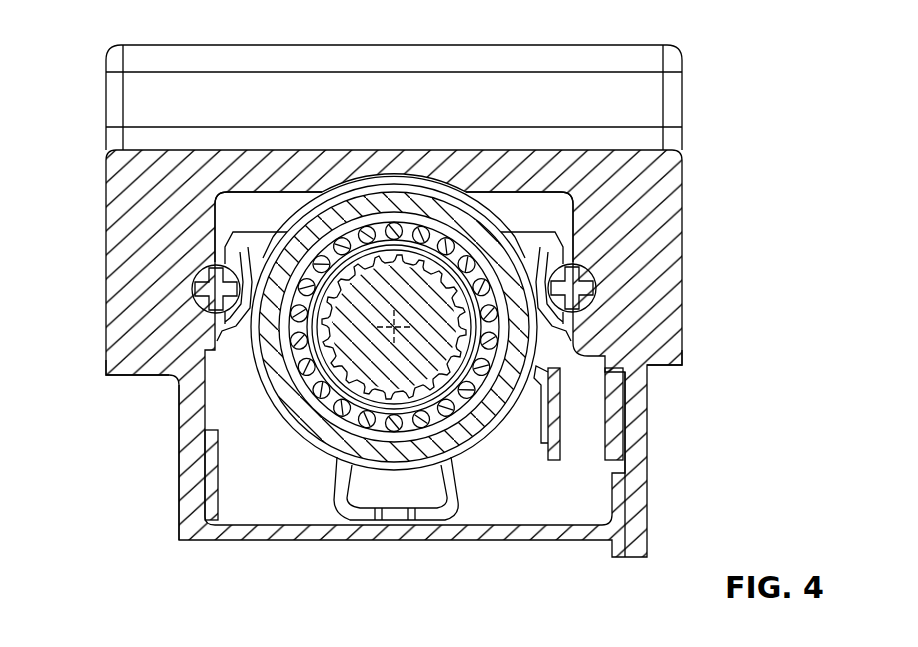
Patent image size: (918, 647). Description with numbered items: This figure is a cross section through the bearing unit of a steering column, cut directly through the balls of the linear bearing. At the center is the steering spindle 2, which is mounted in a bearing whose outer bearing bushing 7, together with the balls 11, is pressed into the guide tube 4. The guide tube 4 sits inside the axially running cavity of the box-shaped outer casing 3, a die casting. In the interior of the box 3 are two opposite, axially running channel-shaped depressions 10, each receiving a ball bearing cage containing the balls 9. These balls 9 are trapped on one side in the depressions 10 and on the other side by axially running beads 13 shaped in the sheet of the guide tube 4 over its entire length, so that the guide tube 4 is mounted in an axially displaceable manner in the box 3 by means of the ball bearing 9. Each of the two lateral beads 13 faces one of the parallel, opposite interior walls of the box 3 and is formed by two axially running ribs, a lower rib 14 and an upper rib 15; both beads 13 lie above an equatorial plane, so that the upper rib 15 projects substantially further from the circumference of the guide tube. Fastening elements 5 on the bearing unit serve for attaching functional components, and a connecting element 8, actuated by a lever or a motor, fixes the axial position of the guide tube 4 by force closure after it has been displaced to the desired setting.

The steering spindle 2 is at (413, 358).
The box-shaped outer casing 3 is at (180, 387).
The guide tube 4 is at (468, 203).
The fastening elements 5 is at (513, 97).
The bearing bushing 7 is at (447, 217).
The connecting element 8 is at (560, 418).
The balls 9 is at (192, 290).
The channel-shaped depressions 10 is at (105, 376).
The balls 11 is at (366, 404).
The beads 13 is at (210, 267).
The lower rib 14 is at (200, 383).
The upper rib 15 is at (213, 203).